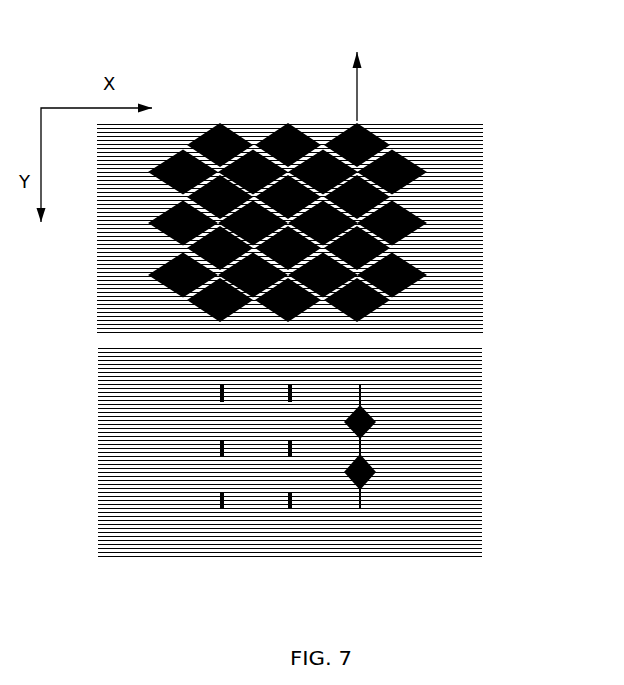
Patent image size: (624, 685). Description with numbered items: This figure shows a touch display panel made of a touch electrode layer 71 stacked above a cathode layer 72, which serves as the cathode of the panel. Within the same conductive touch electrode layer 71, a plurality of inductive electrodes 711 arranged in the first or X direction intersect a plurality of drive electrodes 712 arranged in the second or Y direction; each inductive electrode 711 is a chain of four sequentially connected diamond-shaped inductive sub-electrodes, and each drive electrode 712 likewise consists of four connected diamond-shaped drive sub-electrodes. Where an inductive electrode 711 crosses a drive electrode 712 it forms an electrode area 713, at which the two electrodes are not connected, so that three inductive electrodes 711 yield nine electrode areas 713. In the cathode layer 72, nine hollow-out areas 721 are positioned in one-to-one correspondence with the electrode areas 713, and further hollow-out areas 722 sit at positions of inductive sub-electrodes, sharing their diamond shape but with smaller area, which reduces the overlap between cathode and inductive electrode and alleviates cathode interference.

The touch electrode layer 71 is at (462, 149).
The inductive electrode 711 is at (356, 66).
The drive electrode 712 is at (420, 222).
The electrode area 713 is at (375, 277).
The cathode layer 72 is at (452, 383).
The hollow-out area 721 is at (360, 499).
The hollow-out area 722 is at (376, 422).